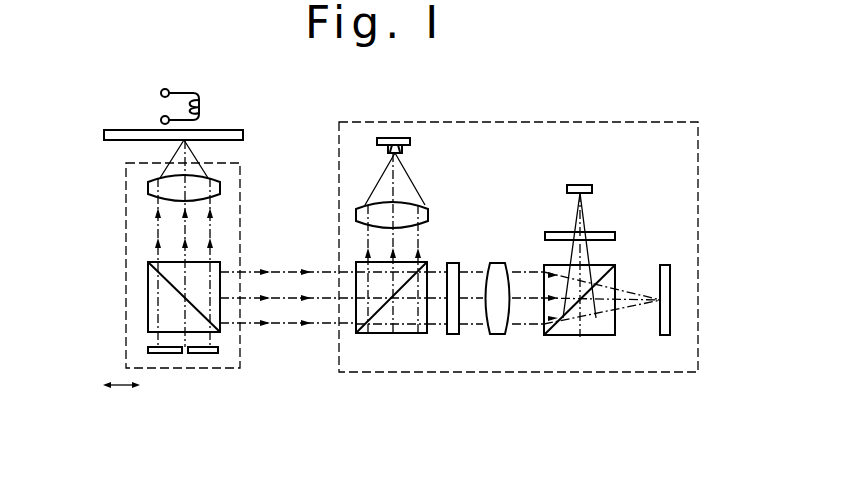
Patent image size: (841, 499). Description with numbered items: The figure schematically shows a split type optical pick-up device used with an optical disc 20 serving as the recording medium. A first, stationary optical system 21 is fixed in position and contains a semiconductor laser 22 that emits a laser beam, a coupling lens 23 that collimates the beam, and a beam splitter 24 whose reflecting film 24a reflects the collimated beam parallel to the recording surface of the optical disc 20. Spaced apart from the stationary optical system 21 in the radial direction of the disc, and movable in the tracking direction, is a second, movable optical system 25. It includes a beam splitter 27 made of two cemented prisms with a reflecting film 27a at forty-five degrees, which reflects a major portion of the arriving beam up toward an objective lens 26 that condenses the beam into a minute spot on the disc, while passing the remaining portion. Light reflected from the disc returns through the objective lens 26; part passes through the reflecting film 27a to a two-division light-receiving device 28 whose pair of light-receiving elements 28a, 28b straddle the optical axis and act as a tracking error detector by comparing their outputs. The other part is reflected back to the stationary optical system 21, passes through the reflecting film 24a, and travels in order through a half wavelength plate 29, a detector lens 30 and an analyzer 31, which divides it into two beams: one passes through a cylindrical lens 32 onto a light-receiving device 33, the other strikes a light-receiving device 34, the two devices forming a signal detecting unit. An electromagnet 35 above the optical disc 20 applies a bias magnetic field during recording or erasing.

The optical disc 20 is at (128, 128).
The stationary optical system 21 is at (536, 122).
The semiconductor laser 22 is at (388, 138).
The coupling lens 23 is at (356, 215).
The beam splitter 24 is at (408, 333).
The reflecting film 24a is at (383, 317).
The movable optical system 25 is at (126, 230).
The objective lens 26 is at (148, 188).
The beam splitter 27 is at (150, 317).
The reflecting film 27a is at (163, 287).
The two-division light-receiving device 28 is at (198, 399).
The light-receiving element 28a is at (160, 353).
The light-receiving element 28b is at (212, 353).
The half wavelength plate 29 is at (455, 334).
The detector lens 30 is at (494, 334).
The analyzer 31 is at (580, 335).
The cylindrical lens 32 is at (616, 236).
The light-receiving device 33 is at (593, 190).
The light-receiving device 34 is at (670, 287).
The electromagnet 35 is at (186, 92).